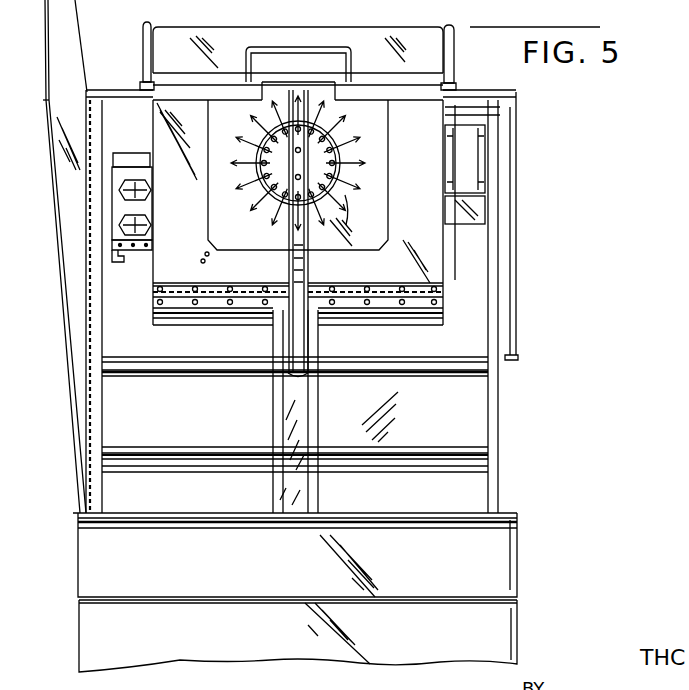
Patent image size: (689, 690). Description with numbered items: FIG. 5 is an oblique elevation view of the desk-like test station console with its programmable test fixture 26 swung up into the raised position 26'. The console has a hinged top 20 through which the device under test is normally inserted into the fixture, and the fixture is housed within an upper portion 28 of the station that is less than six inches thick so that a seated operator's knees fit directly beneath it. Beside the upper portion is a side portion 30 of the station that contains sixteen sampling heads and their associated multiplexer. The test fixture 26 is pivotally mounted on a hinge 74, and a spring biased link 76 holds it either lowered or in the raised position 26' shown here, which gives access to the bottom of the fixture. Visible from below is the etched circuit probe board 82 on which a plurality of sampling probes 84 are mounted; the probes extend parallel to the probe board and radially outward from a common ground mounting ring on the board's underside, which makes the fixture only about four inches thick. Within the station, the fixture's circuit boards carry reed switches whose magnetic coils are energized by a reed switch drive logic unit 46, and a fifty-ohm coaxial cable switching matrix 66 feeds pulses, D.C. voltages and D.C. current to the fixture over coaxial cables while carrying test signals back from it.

The hinged top 20 is at (70, 362).
The test fixture 26 is at (553, 13).
The raised position of test fixture 26' is at (508, 192).
The upper portion 28 is at (496, 441).
The side portion 30 is at (517, 328).
The reed switch drive logic unit 46 is at (466, 152).
The coaxial cable switching matrix 66 is at (137, 253).
The hinge 74 is at (442, 296).
The spring biased link 76 is at (300, 335).
The probe board 82 is at (380, 144).
The sampling probes 84 is at (298, 172).